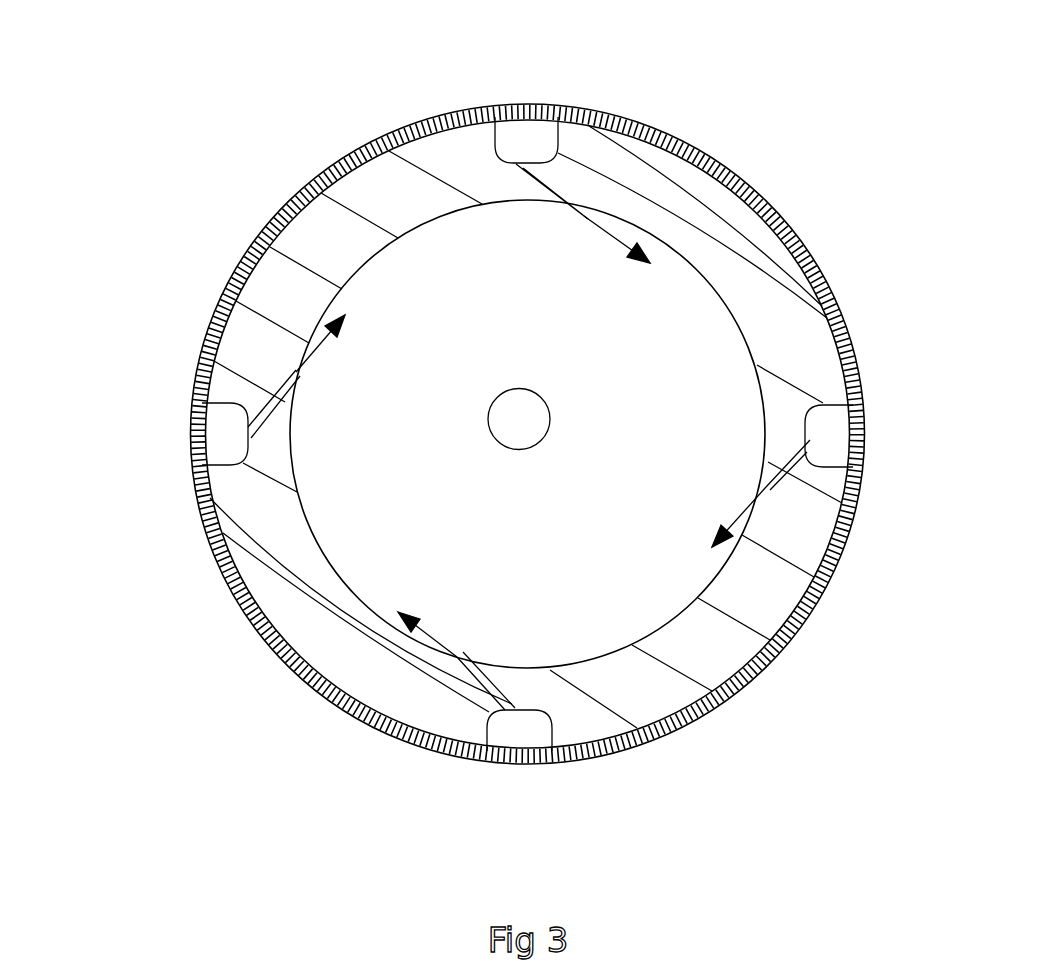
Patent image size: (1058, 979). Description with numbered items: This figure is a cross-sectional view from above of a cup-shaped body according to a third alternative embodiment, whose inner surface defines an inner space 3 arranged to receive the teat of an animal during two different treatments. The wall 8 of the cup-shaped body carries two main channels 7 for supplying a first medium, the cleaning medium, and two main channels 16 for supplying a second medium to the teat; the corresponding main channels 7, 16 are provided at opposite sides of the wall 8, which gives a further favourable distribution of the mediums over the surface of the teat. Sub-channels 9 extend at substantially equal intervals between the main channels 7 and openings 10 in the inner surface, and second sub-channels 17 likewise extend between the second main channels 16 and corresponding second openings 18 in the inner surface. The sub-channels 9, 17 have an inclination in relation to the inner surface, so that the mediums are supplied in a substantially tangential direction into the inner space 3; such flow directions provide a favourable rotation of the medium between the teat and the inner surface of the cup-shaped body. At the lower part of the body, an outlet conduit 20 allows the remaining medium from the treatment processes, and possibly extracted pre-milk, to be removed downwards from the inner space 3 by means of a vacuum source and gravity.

The inner space 3 is at (393, 237).
The main channel 7 is at (218, 438).
The wall 8 is at (710, 225).
The sub-channels 9 is at (268, 420).
The openings 10 is at (292, 380).
The second main channel 16 is at (532, 152).
The second sub-channels 17 is at (552, 207).
The second openings 18 is at (572, 208).
The outlet conduit 20 is at (521, 421).